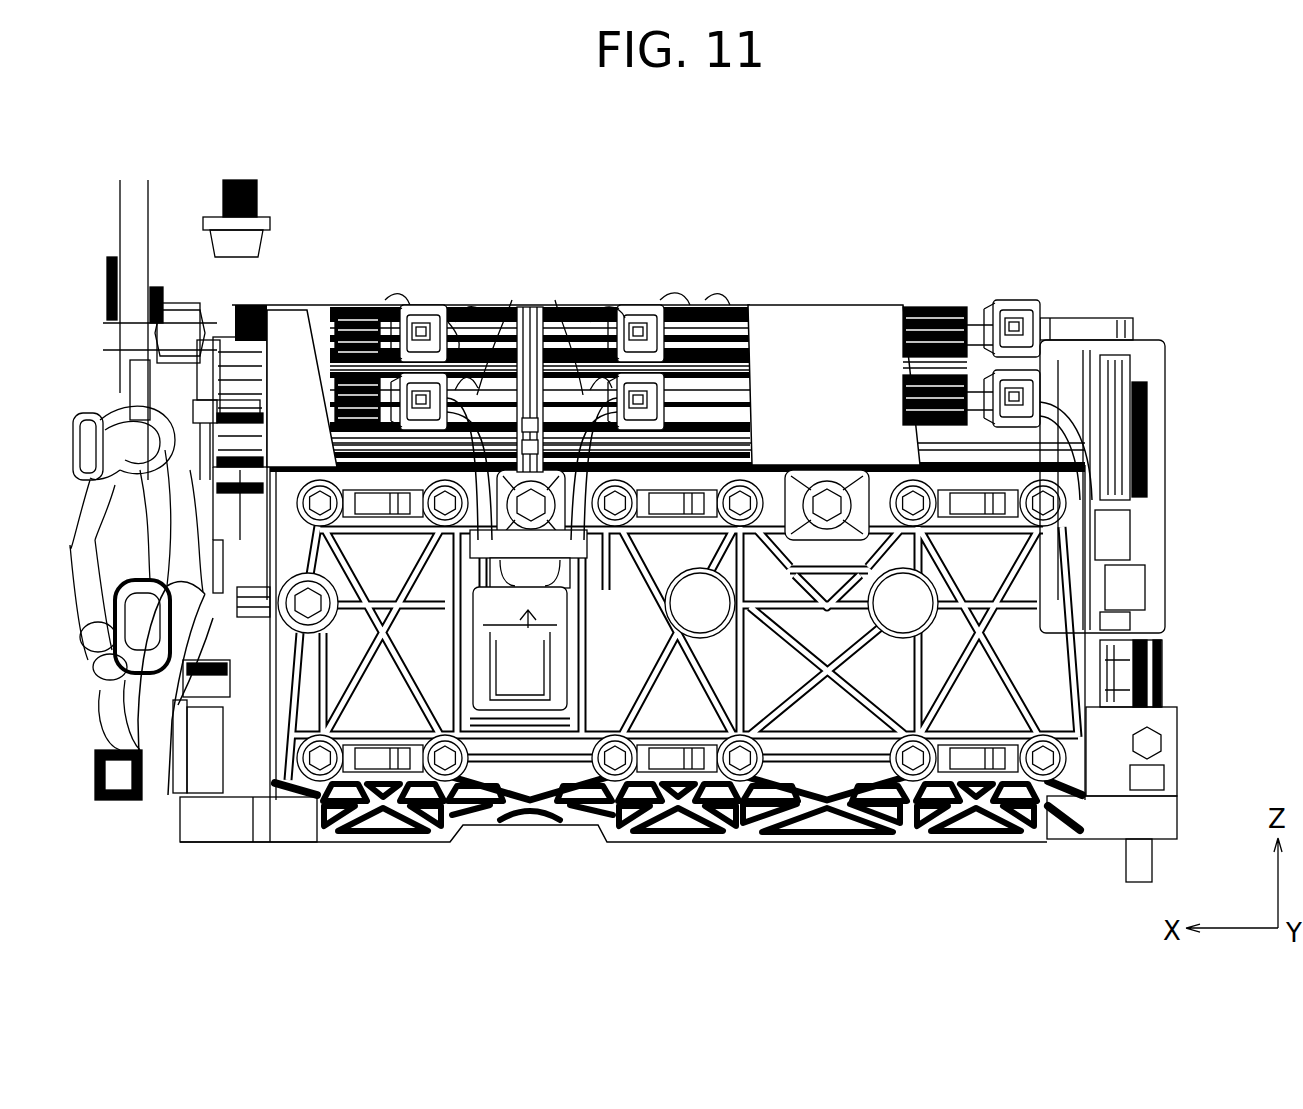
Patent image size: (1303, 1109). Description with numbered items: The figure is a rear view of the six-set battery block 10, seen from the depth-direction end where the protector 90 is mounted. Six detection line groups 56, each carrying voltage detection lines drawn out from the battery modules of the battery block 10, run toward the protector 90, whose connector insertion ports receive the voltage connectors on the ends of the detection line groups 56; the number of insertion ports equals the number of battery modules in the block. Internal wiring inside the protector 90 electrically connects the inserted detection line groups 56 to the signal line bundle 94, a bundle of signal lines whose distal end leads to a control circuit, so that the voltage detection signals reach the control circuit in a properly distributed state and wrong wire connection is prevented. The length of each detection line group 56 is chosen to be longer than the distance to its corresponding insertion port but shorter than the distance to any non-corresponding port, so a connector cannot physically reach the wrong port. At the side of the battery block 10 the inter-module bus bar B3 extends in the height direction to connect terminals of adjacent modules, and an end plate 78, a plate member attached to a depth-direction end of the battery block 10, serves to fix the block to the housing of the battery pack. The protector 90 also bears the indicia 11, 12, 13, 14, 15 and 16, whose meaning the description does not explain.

The battery block 10 is at (666, 509).
The terminal label 11 is at (301, 410).
The terminal label 12 is at (777, 404).
The terminal label 13 is at (877, 405).
The terminal label 14 is at (872, 334).
The terminal label 15 is at (784, 334).
The terminal label 16 is at (289, 334).
The detection line group 56 is at (570, 307).
The end plate 78 is at (1100, 648).
The protector 90 is at (576, 317).
The signal line bundle 94 is at (157, 437).
The inter-module bus bar B3 is at (1160, 385).